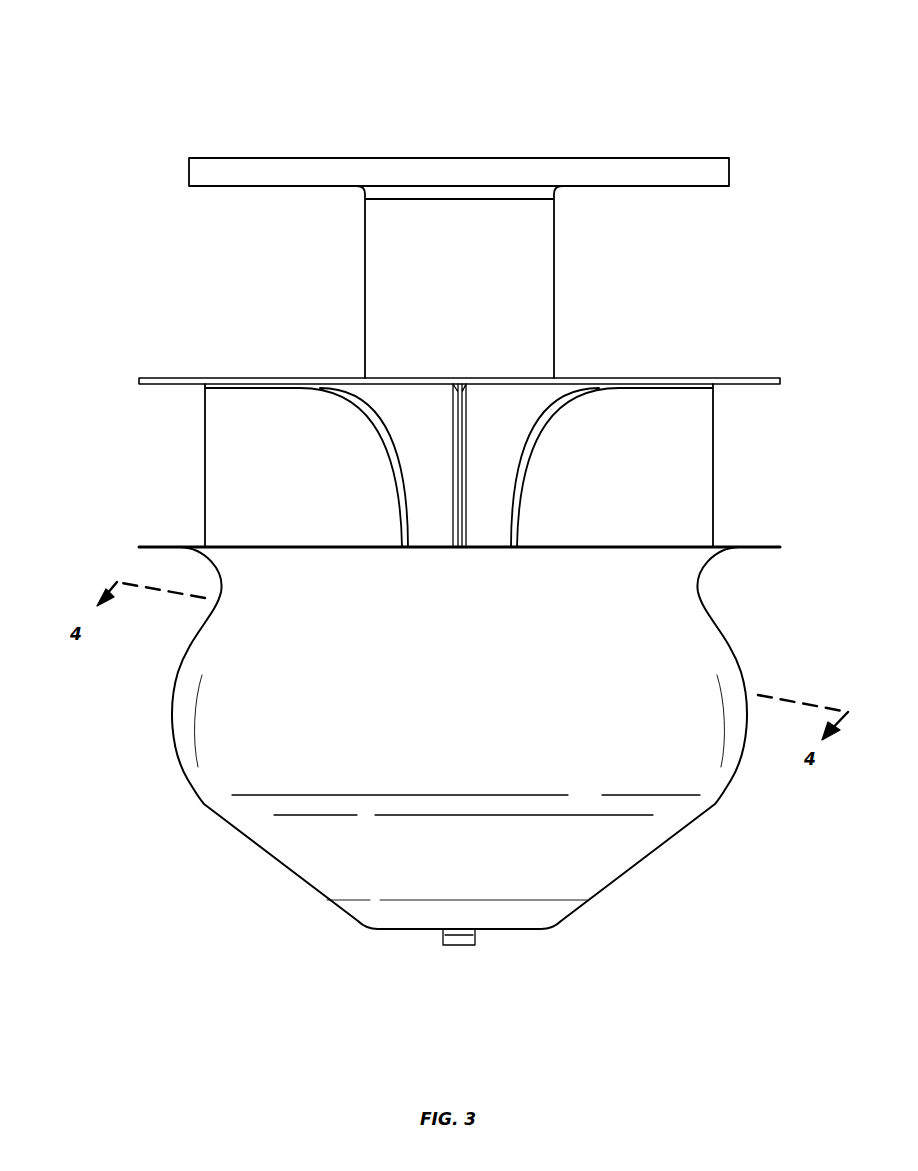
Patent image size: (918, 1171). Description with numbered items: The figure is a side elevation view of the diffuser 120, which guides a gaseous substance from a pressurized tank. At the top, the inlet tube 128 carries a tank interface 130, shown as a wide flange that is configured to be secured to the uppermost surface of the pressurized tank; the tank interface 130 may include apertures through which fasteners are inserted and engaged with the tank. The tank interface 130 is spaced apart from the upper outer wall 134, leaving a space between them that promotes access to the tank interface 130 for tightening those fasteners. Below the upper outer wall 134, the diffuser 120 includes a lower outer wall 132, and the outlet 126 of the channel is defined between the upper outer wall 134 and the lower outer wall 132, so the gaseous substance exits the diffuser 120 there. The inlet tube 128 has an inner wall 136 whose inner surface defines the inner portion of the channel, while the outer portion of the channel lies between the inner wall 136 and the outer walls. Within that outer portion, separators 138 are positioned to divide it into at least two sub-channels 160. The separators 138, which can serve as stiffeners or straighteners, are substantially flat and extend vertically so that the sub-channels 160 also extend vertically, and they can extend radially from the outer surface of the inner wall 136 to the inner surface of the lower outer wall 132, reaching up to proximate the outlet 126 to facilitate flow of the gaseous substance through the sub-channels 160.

The diffuser 120 is at (270, 862).
The outlet 126 is at (170, 444).
The inlet tube 128 is at (525, 262).
The tank interface 130 is at (270, 158).
The lower outer wall 132 is at (628, 841).
The upper outer wall 134 is at (716, 378).
The inner wall 136 is at (415, 420).
The separators 138 is at (257, 492).
The sub-channels 160 is at (497, 422).